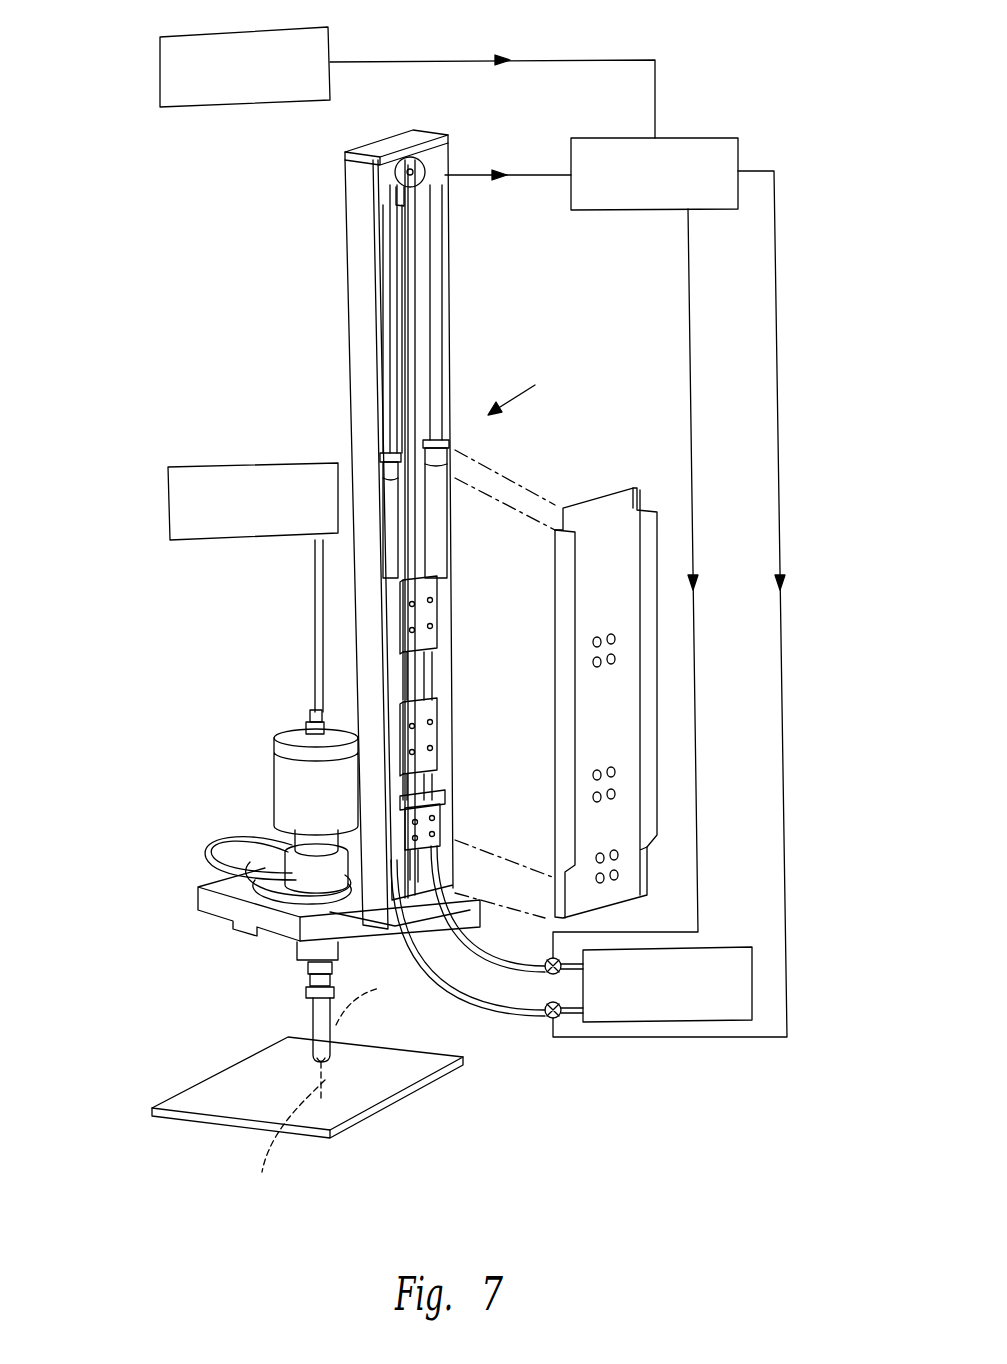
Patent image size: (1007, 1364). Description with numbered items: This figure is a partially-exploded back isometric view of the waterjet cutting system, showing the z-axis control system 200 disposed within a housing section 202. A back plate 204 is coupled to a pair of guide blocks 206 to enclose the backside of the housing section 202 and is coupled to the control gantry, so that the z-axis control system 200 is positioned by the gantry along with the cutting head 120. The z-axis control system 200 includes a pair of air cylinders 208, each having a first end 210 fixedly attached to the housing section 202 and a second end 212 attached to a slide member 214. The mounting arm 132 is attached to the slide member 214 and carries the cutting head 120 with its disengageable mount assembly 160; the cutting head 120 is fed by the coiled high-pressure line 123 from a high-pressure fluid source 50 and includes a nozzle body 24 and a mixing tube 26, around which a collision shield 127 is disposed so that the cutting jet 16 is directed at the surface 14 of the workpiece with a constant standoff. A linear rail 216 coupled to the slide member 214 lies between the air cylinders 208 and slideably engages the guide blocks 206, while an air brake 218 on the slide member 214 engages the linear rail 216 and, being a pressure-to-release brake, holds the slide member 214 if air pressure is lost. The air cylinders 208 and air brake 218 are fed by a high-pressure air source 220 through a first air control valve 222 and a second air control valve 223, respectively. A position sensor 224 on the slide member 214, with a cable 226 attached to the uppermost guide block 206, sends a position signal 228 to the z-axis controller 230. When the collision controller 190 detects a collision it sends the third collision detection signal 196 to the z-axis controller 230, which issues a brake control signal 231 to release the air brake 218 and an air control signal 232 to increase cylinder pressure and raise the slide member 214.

The surface 14 is at (380, 1085).
The cutting jet 16 is at (262, 1172).
The nozzle body 24 is at (308, 972).
The mixing tube 26 is at (369, 1038).
The high-pressure fluid source 50 is at (168, 486).
The cutting head 120 is at (148, 788).
The coiled high-pressure line 123 is at (316, 625).
The collision shield 127 is at (314, 1022).
The mounting arm 132 is at (198, 888).
The disengageable mount assembly 160 is at (162, 848).
The collision controller 190 is at (160, 52).
The third collision detection signal 196 is at (503, 52).
The z-axis control system 200 is at (518, 640).
The housing section 202 is at (352, 428).
The back plate 204 is at (620, 490).
The guide blocks 206 is at (425, 632).
The air cylinders 208 is at (440, 528).
The first end 210 is at (430, 736).
The second end 212 is at (426, 215).
The slide member 214 is at (347, 182).
The linear rail 216 is at (414, 366).
The air brake 218 is at (441, 832).
The high-pressure air source 220 is at (720, 948).
The first air control valve 222 is at (548, 960).
The second air control valve 223 is at (548, 1017).
The position sensor 224 is at (418, 172).
The cable 226 is at (384, 320).
The position signal 228 is at (505, 174).
The z-axis controller 230 is at (700, 138).
The brake control signal 231 is at (783, 582).
The air control signal 232 is at (696, 582).